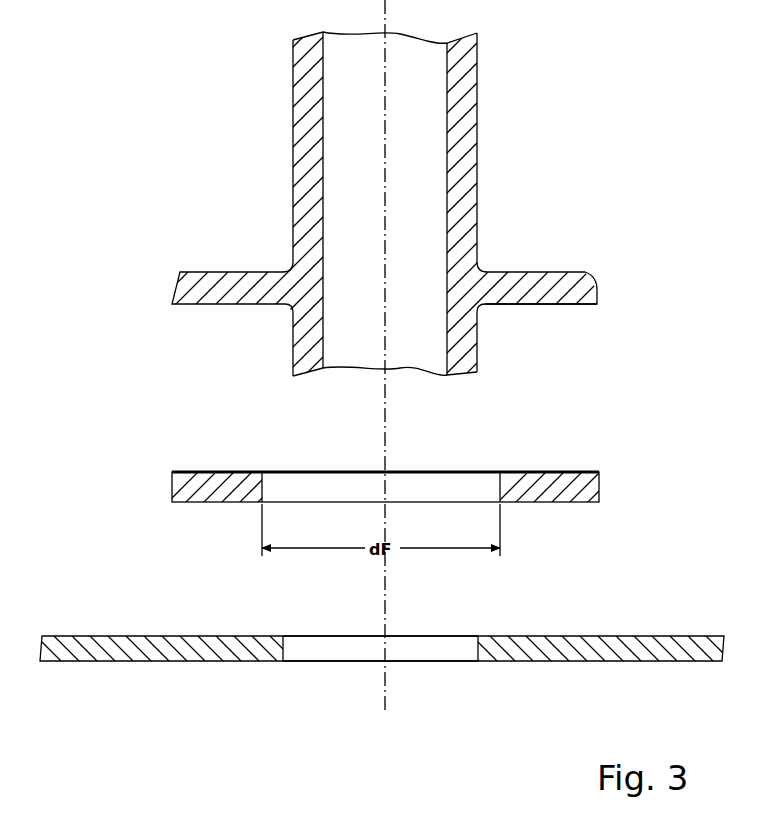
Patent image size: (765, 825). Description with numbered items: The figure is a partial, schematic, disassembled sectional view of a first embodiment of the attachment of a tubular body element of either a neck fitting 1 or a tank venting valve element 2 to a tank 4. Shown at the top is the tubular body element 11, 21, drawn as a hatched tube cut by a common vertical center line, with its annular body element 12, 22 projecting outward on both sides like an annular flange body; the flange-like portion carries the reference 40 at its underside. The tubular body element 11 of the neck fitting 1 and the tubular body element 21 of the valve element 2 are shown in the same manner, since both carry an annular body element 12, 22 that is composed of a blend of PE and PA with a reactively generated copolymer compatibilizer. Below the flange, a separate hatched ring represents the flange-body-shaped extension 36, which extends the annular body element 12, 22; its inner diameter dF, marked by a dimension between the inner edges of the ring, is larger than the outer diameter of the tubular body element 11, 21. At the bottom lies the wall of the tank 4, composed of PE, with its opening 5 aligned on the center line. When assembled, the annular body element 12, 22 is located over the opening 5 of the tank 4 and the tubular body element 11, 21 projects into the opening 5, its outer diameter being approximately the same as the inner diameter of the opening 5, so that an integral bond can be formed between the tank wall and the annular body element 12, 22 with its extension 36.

The neck fitting 1 is at (382, 225).
The valve element 2 is at (382, 225).
The tubular body element 11 is at (382, 225).
The tubular body element 21 is at (308, 75).
The annular body element 12 is at (353, 295).
The annular body element 22 is at (353, 295).
The flange underside joining face 40 is at (535, 305).
The flange-body-shaped extension 36 is at (555, 472).
The tank 4 is at (382, 662).
The opening 5 is at (428, 650).